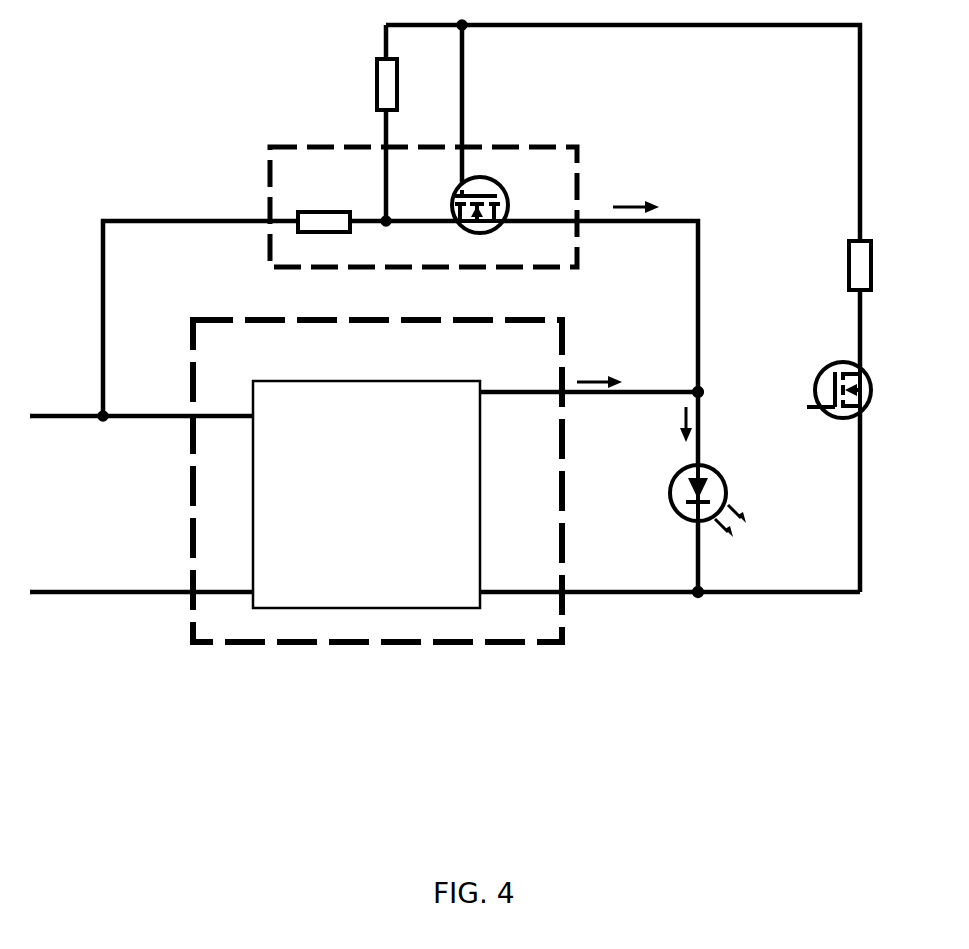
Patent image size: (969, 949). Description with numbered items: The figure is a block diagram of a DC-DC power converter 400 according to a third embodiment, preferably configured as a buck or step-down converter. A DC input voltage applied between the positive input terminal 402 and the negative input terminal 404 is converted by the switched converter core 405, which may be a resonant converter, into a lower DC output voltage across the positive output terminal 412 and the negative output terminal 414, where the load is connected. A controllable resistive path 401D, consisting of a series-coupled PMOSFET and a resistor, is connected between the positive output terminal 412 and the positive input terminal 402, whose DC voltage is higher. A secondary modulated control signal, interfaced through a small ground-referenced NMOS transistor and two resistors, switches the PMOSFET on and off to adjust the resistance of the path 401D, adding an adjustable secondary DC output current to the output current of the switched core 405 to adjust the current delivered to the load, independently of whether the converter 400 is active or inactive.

The DC-DC power converter 400 is at (466, 382).
The controllable resistive path 401D is at (262, 183).
The positive input terminal 402 is at (136, 407).
The negative input terminal 404 is at (136, 607).
The switched converter core 405 is at (377, 504).
The positive output terminal 412 is at (727, 374).
The negative output terminal 414 is at (734, 619).